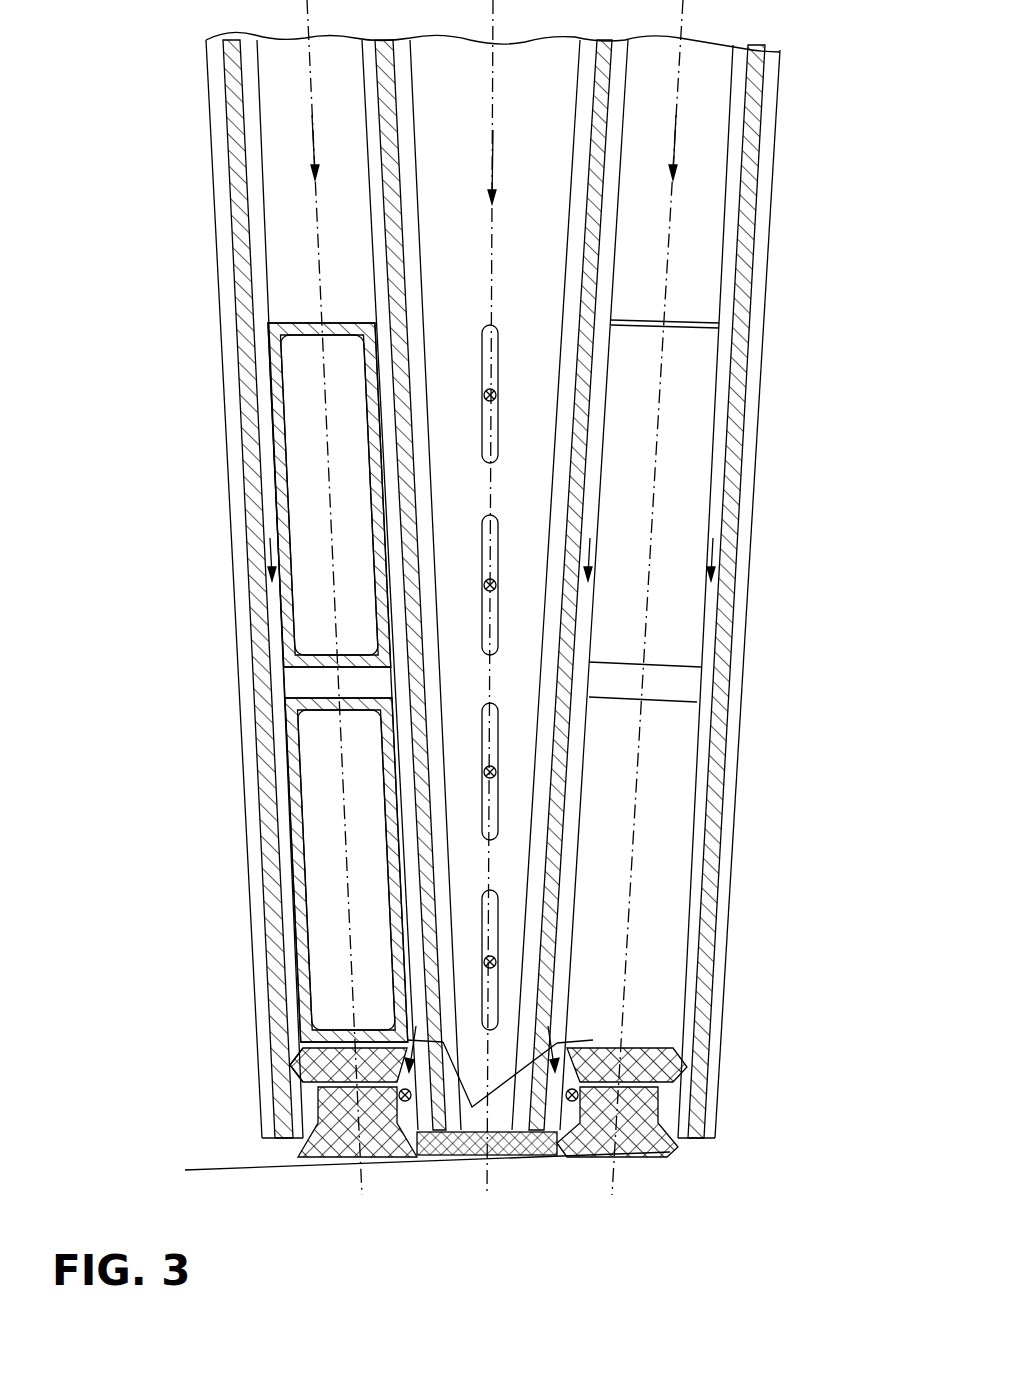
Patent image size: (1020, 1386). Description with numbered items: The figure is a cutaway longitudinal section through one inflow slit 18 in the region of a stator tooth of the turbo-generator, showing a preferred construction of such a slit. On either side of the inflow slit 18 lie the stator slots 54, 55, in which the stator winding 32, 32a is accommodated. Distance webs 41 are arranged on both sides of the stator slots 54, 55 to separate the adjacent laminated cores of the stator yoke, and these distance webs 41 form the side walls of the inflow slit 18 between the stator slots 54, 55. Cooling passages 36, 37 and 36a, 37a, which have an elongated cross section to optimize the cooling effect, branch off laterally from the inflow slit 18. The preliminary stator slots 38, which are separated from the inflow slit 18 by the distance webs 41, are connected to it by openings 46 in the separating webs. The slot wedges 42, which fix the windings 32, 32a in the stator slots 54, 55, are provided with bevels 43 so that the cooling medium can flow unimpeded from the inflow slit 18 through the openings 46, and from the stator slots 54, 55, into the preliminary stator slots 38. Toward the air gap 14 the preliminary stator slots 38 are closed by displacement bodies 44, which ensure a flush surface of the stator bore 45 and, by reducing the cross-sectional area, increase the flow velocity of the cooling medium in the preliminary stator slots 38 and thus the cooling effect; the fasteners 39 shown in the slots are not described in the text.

The air gap 14 is at (650, 1216).
The inflow slit 18 is at (537, 461).
The stator winding 32 is at (320, 835).
The stator winding 32a is at (302, 464).
The cooling passage 36 is at (497, 812).
The cooling passage 36a is at (498, 350).
The cooling passage 37 is at (497, 920).
The cooling passage 37a is at (498, 545).
The preliminary stator slot 38 is at (663, 1102).
The fastener 39 is at (513, 1157).
The distance web 41 is at (232, 232).
The slot wedge 42 is at (312, 1050).
The bevel 43 is at (298, 1070).
The displacement body 44 is at (341, 1150).
The stator bore 45 is at (240, 1170).
The opening 46 is at (463, 1130).
The stator slot 54 is at (288, 178).
The stator slot 55 is at (705, 145).